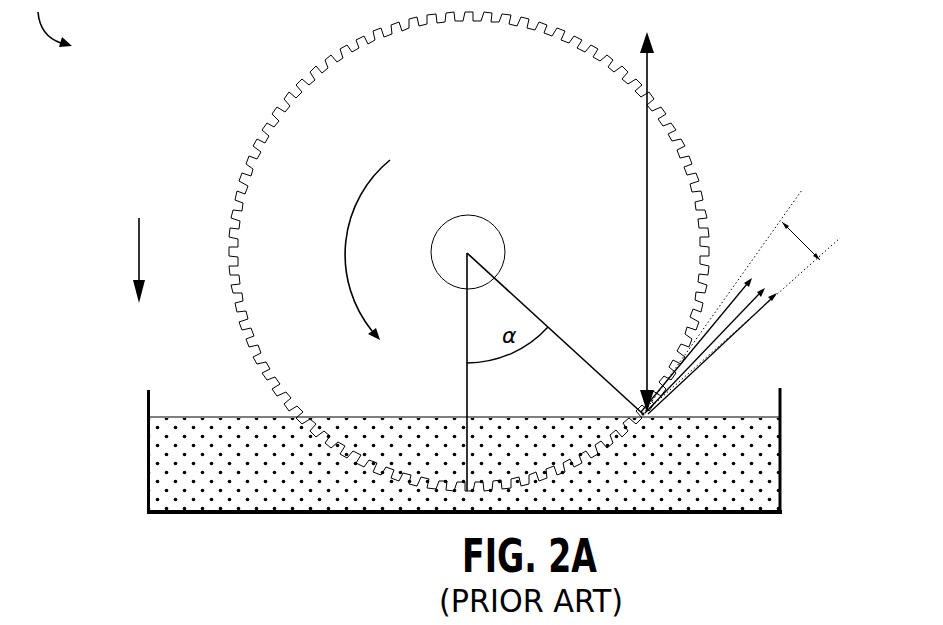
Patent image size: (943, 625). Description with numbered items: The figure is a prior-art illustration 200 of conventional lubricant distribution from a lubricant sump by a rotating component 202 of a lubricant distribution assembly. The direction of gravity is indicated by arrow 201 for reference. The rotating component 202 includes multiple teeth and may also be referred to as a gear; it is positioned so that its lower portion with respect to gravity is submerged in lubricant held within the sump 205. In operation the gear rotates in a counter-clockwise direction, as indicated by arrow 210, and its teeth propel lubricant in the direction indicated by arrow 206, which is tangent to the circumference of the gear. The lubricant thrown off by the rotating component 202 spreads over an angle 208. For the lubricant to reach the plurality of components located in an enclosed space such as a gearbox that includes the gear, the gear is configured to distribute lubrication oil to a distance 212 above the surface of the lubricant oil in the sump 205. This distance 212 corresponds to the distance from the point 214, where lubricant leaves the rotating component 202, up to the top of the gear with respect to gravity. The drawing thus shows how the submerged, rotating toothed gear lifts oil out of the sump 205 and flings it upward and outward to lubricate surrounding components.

The illustration 200 is at (47, 23).
The arrow 201 is at (138, 270).
The rotating component 202 is at (272, 137).
The sump 205 is at (781, 444).
The arrow 206 is at (763, 304).
The angle 208 is at (797, 232).
The arrow 210 is at (352, 216).
The distance 212 is at (646, 180).
The point 214 is at (640, 413).